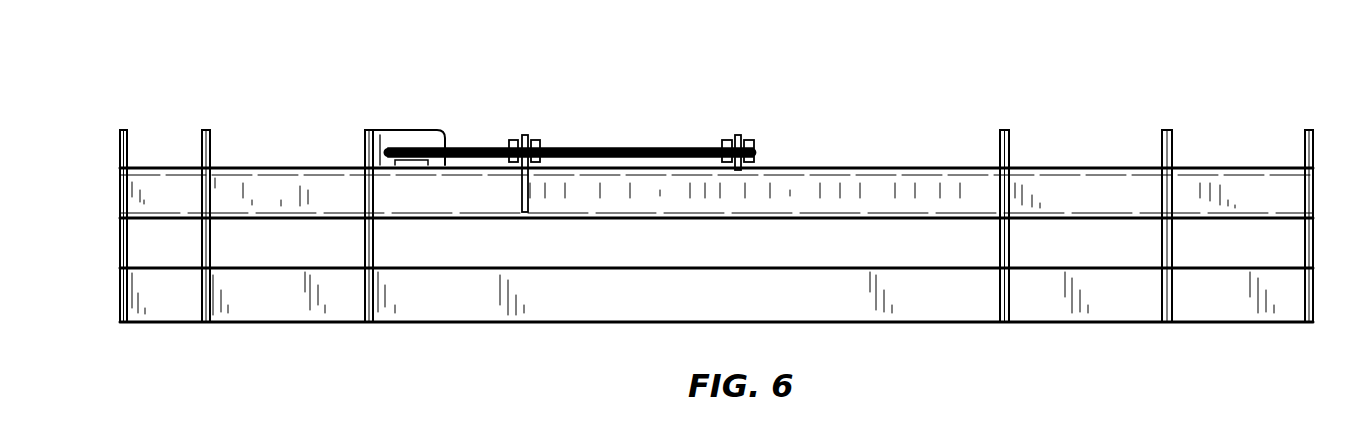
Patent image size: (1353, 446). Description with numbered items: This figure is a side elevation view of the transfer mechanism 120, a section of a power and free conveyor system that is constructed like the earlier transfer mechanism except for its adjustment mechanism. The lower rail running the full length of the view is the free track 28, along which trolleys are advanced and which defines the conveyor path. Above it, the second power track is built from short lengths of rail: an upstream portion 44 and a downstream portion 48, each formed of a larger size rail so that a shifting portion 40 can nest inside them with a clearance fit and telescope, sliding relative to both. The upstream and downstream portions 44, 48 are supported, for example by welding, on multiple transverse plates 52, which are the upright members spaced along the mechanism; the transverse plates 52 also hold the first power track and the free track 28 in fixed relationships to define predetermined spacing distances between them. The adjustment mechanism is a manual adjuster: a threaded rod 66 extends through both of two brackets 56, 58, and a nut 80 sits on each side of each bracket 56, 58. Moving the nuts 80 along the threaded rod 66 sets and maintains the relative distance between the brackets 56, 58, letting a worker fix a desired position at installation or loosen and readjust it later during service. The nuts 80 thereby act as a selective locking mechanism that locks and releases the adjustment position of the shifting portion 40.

The transfer mechanism 120 is at (868, 62).
The free track 28 is at (422, 292).
The shifting portion 40 is at (860, 190).
The upstream portion 44 is at (1082, 186).
The downstream portion 48 is at (300, 190).
The transverse plates 52 is at (120, 140).
The bracket 56 is at (738, 136).
The bracket 58 is at (525, 138).
The threaded rod 66 is at (626, 148).
The nut 80 is at (512, 143).